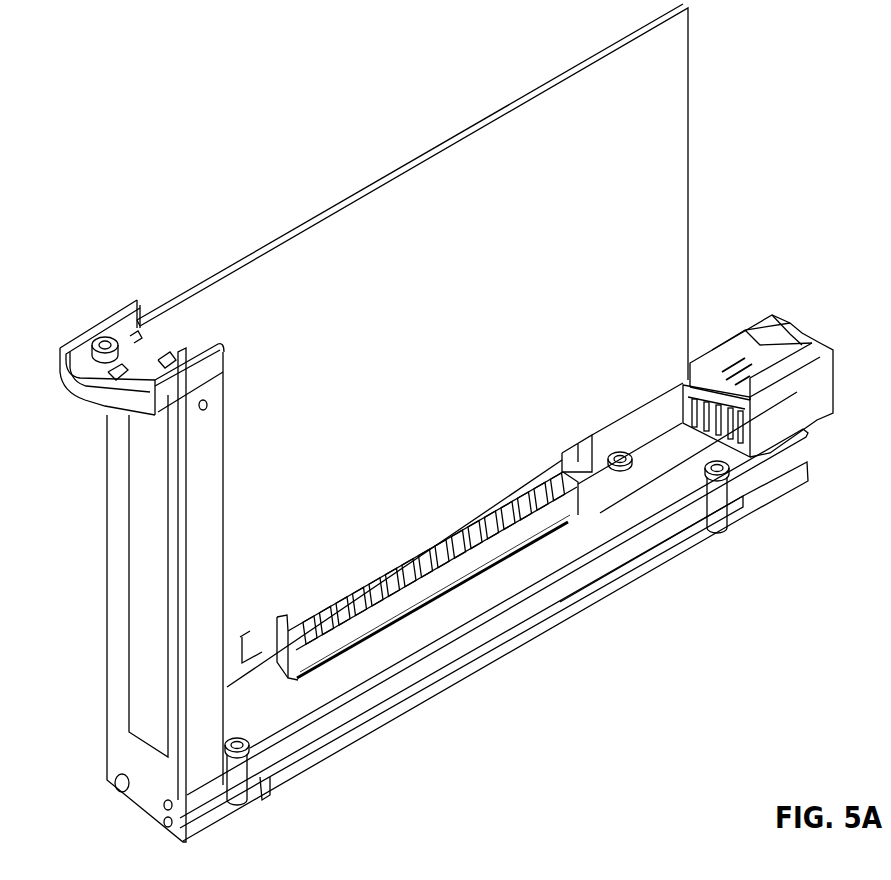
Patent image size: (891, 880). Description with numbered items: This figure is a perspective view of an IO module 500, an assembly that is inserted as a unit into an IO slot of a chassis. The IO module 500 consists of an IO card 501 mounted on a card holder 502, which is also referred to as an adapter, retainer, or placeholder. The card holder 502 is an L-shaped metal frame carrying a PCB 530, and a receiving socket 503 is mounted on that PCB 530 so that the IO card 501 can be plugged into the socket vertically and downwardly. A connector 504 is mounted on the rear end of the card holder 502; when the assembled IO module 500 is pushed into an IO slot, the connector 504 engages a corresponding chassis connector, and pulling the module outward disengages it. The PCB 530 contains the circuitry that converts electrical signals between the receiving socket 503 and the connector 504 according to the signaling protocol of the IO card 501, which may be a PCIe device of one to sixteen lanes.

The IO module 500 is at (203, 186).
The IO card 501 is at (683, 163).
The card holder 502 is at (522, 640).
The receiving socket 503 is at (523, 530).
The connector 504 is at (806, 403).
The PCB 530 is at (670, 503).